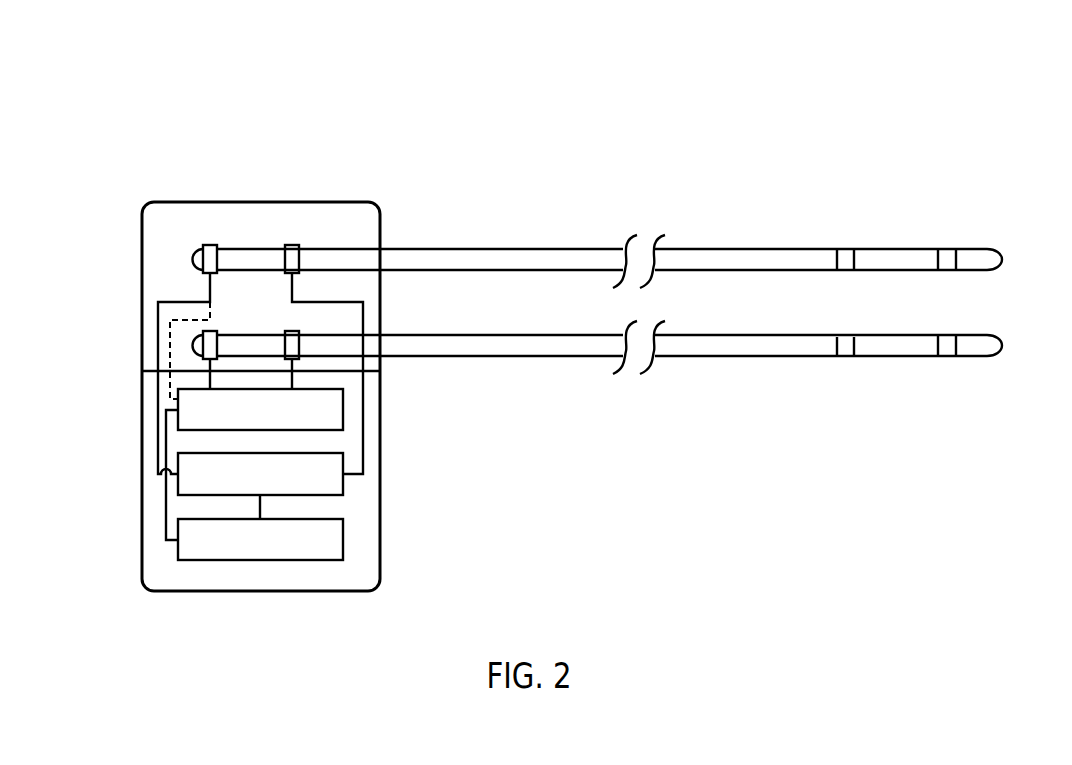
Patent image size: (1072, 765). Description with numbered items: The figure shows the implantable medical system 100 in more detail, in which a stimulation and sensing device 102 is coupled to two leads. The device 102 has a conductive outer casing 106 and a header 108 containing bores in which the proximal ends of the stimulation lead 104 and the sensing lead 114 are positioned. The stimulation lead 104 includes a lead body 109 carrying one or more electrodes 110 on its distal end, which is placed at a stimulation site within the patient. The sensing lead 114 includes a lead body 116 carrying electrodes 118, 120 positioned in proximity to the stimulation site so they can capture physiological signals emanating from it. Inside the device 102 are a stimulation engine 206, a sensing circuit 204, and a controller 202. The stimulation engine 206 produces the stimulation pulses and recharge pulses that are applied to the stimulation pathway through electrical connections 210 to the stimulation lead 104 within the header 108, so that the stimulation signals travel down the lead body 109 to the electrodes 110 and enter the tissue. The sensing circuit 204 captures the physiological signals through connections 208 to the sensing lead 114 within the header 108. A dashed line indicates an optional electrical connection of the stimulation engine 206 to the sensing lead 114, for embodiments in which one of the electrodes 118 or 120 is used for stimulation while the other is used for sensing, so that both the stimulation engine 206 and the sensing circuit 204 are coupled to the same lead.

The implantable medical system 100 is at (133, 135).
The stimulation and sensing device 102 is at (140, 433).
The stimulation lead 104 is at (462, 358).
The conductive outer casing 106 is at (177, 582).
The header 108 is at (175, 222).
The lead body 109 is at (567, 348).
The electrodes 110 is at (943, 358).
The sensing lead 114 is at (432, 247).
The lead body 116 is at (525, 262).
The electrode 118 is at (948, 243).
The electrode 120 is at (843, 245).
The controller 202 is at (343, 538).
The sensing circuit 204 is at (343, 487).
The stimulation engine 206 is at (343, 410).
The connections 208 is at (290, 245).
The electrical connections 210 is at (300, 357).